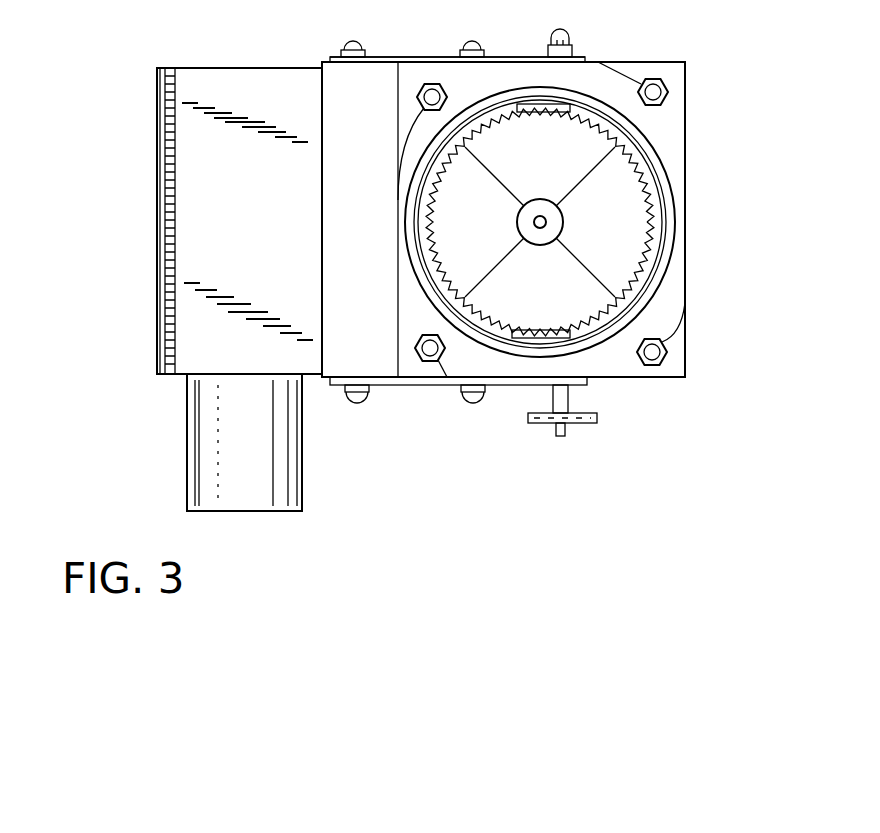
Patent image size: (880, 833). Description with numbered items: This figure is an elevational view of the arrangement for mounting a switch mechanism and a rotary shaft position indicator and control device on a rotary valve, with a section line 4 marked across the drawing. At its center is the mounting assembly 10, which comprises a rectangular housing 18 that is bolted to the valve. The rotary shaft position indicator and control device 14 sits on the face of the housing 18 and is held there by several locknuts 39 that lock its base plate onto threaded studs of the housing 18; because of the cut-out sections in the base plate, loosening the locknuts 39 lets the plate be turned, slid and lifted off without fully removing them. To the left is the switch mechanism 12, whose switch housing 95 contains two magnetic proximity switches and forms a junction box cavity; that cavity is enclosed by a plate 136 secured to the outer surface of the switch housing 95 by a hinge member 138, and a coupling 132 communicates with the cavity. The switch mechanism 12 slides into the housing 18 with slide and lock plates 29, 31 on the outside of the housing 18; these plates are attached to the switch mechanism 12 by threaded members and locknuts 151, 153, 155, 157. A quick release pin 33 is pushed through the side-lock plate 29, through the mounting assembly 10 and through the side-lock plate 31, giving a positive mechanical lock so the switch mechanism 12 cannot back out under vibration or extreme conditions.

The mounting assembly 10 is at (707, 116).
The switch mechanism 12 is at (219, 58).
The rotary shaft position indicator and control device 14 is at (630, 226).
The rectangular housing 18 is at (374, 245).
The slide and lock plate 29 is at (415, 385).
The slide and lock plate 31 is at (393, 56).
The quick release pin 33 is at (560, 436).
The locknut 39 is at (420, 100).
The switch housing 95 is at (262, 239).
The coupling 132 is at (197, 451).
The plate 136 is at (157, 232).
The hinge member 138 is at (166, 278).
The locknut 151 is at (473, 403).
The locknut 153 is at (357, 403).
The locknut 155 is at (472, 40).
The locknut 157 is at (358, 40).
The section line 4- 4 is at (105, 378).